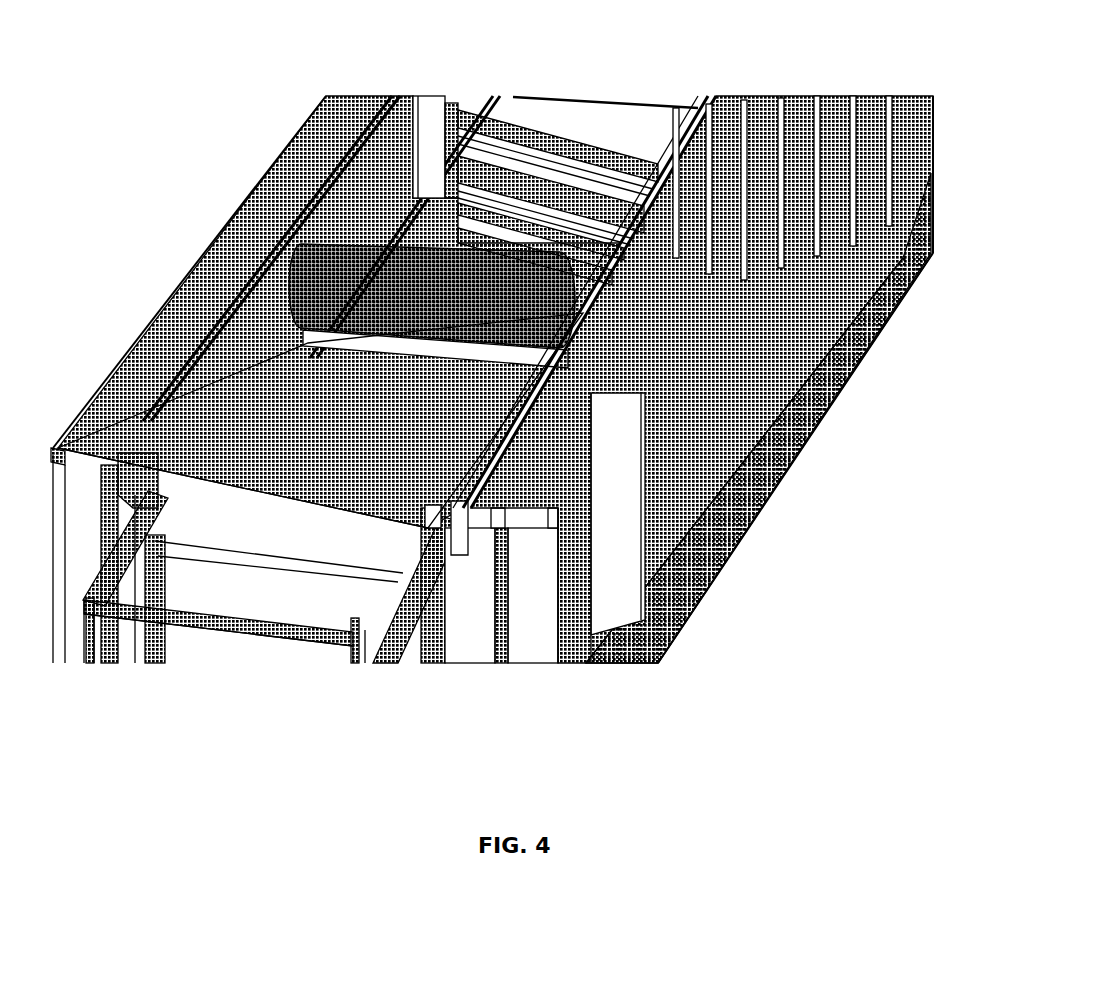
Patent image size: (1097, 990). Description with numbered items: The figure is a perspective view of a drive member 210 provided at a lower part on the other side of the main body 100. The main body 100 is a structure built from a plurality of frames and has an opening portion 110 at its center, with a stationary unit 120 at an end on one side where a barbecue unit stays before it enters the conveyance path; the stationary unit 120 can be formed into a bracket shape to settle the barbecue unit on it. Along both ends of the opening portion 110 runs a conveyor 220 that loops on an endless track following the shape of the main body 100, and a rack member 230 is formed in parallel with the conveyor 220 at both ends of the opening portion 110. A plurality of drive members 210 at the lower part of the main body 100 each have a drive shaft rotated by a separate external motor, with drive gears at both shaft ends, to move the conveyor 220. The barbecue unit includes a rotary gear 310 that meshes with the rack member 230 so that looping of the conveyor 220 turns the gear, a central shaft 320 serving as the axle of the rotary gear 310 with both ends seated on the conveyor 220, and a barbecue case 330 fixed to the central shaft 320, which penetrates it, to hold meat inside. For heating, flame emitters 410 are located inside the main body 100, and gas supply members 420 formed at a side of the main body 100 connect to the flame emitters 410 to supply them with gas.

The main body 100 is at (784, 512).
The opening portion 110 is at (385, 165).
The stationary unit 120 is at (247, 403).
The drive member 210 is at (503, 457).
The conveyor 220 is at (683, 100).
The rack member 230 is at (622, 228).
The rotary gear 310 is at (565, 290).
The central shaft 320 is at (768, 430).
The barbecue case 330 is at (283, 221).
The flame emitter 410 is at (457, 172).
The gas supply member 420 is at (857, 293).